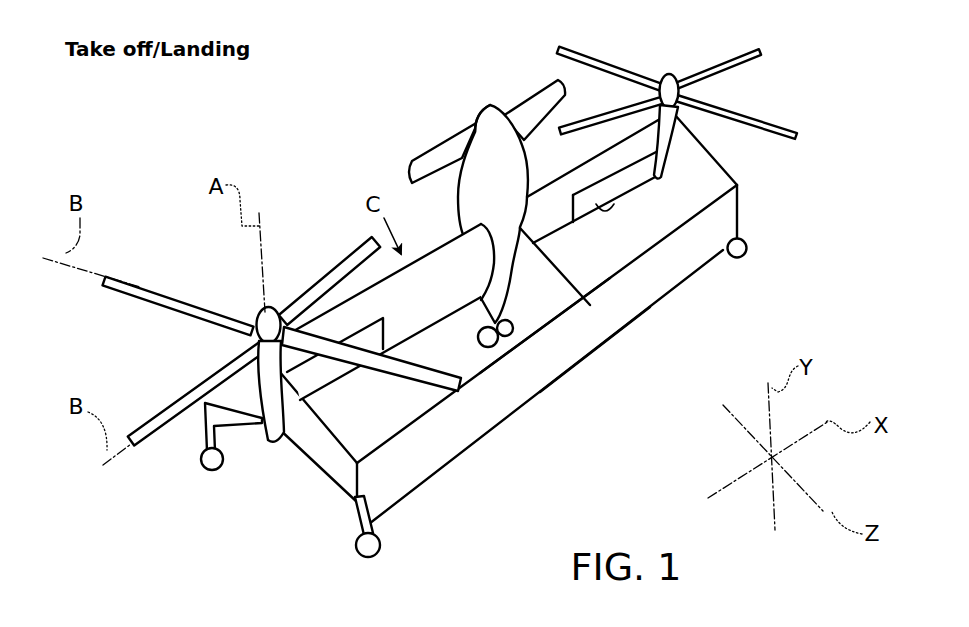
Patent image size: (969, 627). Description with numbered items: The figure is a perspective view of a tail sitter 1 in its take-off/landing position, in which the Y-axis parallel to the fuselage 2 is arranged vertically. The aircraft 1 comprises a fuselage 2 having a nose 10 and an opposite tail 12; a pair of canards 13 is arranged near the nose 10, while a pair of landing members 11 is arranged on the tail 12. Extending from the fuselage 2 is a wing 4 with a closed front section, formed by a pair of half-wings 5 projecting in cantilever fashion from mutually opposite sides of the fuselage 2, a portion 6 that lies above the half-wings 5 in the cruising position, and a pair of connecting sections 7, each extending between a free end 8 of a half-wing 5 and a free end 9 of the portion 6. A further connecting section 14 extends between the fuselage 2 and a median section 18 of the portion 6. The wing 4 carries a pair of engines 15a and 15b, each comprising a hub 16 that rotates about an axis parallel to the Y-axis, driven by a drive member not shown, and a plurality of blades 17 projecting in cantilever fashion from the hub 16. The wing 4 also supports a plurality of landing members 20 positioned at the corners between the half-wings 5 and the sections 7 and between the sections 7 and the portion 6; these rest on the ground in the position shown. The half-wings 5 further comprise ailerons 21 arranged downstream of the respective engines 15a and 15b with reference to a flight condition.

The tail sitter 1 is at (812, 55).
The fuselage 2 is at (510, 170).
The wing 4 is at (680, 295).
The half-wings 5 is at (415, 310).
The portion 6 is at (528, 382).
The connecting sections 7 is at (322, 464).
The free ends 8 is at (262, 392).
The free ends 9 is at (352, 490).
The nose 10 is at (487, 106).
The landing members 11 is at (515, 330).
The tail 12 is at (479, 304).
The canards 13 is at (527, 106).
The further connecting section 14 is at (600, 310).
The engine 15a is at (653, 55).
The engine 15b is at (214, 259).
The hub 16 is at (254, 318).
The blades 17 is at (740, 57).
The median section 18 is at (608, 333).
The landing members 20 is at (210, 470).
The ailerons 21 is at (330, 375).